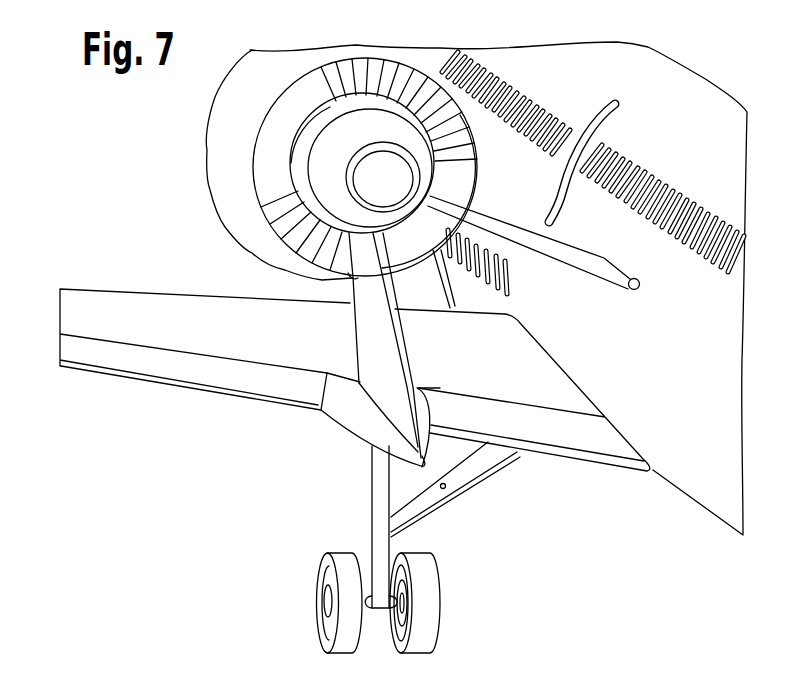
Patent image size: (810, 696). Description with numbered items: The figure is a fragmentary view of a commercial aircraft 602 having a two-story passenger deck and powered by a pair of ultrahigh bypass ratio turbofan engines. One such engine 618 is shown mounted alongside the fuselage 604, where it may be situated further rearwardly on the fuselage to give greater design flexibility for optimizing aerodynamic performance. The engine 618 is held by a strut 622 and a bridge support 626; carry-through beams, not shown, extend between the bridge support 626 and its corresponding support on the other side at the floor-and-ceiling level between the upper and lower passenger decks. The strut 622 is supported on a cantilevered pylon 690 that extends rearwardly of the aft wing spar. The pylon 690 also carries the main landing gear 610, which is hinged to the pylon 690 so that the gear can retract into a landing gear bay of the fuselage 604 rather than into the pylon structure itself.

The commercial aircraft 602 is at (92, 203).
The fuselage 604 is at (710, 407).
The engine 618 is at (216, 152).
The strut 622 is at (372, 350).
The bridge support 626 is at (575, 264).
The pylon 690 is at (355, 434).
The main landing gear 610 is at (427, 610).